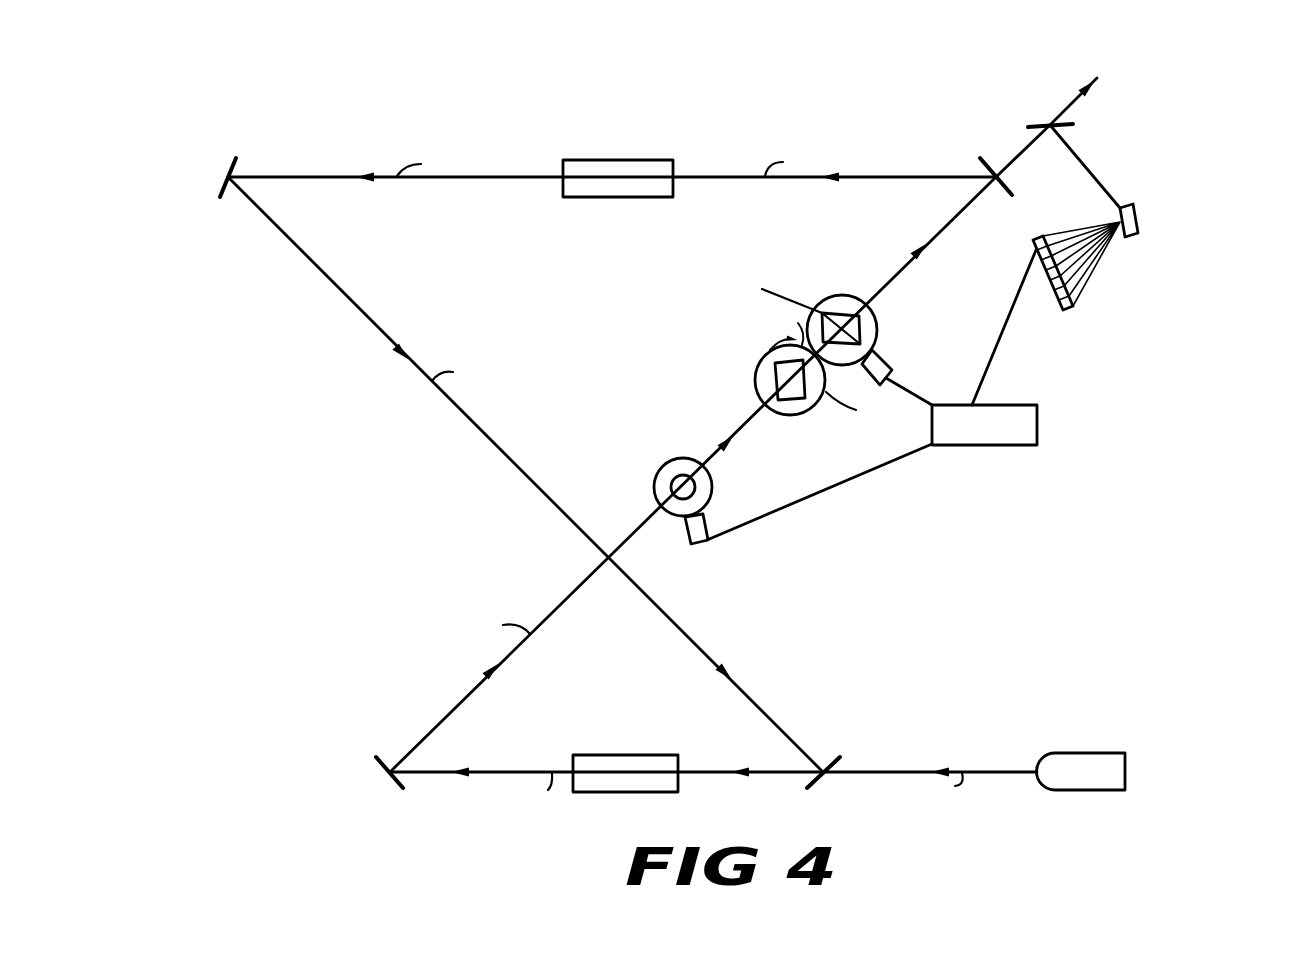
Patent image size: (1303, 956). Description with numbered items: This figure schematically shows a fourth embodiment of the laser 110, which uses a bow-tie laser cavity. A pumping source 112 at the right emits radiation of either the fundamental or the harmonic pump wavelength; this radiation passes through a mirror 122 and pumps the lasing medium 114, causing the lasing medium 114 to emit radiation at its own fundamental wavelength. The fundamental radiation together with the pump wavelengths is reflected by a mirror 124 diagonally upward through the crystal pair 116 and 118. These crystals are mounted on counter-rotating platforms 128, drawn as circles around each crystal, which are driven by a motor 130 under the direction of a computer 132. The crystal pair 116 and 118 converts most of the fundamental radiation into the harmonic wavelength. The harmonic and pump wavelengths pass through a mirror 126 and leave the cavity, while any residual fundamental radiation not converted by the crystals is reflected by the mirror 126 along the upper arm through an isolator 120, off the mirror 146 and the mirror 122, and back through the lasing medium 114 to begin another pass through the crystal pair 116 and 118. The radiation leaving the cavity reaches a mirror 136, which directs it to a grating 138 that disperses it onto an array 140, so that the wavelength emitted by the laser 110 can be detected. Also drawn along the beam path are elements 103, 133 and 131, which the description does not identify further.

The aperture 103 is at (683, 458).
The laser 110 is at (319, 109).
The pumping source 112 is at (1063, 752).
The lasing medium 114 is at (612, 755).
The crystal 116 is at (783, 400).
The crystal 118 is at (876, 329).
The isolator 120 is at (607, 160).
The mirror 122 is at (822, 765).
The mirror 124 is at (382, 758).
The mirror 126 is at (990, 167).
The counter-rotating platforms 128 is at (845, 296).
The motor 130 is at (893, 363).
The detector 131 is at (686, 546).
The computer 132 is at (1040, 421).
The aperture opening 133 is at (656, 498).
The mirror 136 is at (1038, 123).
The grating 138 is at (1138, 216).
The array 140 is at (1071, 310).
The mirror 146 is at (257, 137).